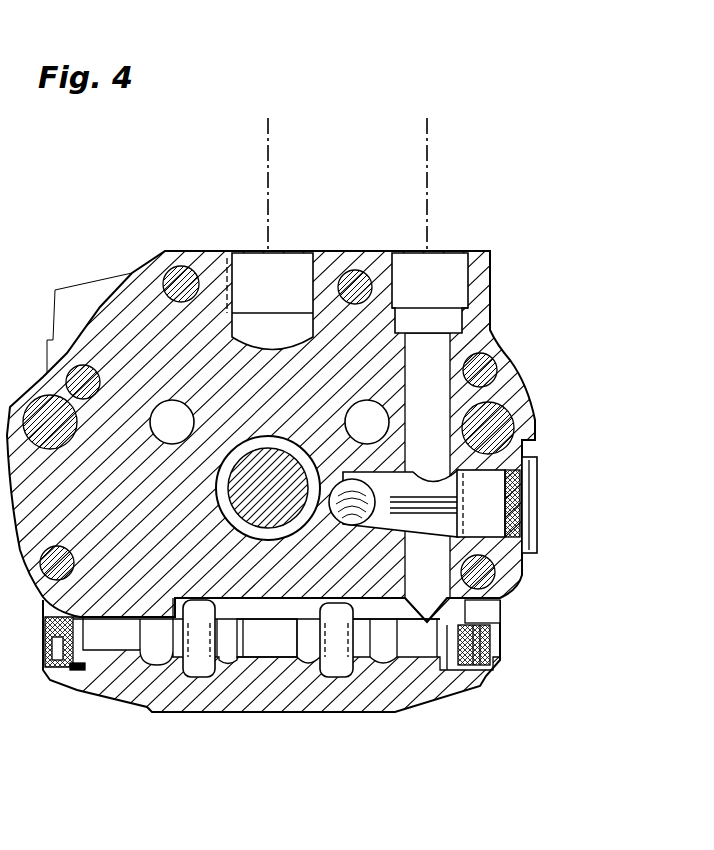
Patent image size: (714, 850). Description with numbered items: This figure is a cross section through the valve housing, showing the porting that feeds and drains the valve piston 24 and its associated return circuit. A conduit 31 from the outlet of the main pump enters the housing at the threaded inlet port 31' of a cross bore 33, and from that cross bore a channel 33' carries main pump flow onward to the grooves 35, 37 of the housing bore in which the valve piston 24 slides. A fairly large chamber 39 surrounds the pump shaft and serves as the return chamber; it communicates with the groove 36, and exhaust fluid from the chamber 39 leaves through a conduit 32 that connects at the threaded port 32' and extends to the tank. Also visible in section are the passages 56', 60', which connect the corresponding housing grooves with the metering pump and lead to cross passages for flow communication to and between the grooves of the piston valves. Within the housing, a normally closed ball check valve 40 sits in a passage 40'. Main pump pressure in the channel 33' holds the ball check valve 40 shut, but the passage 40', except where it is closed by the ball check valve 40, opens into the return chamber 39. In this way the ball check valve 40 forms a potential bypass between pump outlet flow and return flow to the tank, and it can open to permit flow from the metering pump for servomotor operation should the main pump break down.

The valve piston 24 is at (113, 640).
The conduit 31 is at (462, 185).
The threaded inlet port 31' is at (438, 272).
The conduit 32 is at (305, 185).
The threaded port 32' is at (278, 278).
The cross bore 33 is at (357, 482).
The channel 33' is at (307, 702).
The groove 35 is at (333, 665).
The groove 36 is at (267, 660).
The groove 37 is at (198, 665).
The chamber 39 is at (352, 502).
The ball check valve 40 is at (465, 499).
The passage 40' is at (487, 510).
The passage 56' is at (367, 422).
The passage 60' is at (172, 422).